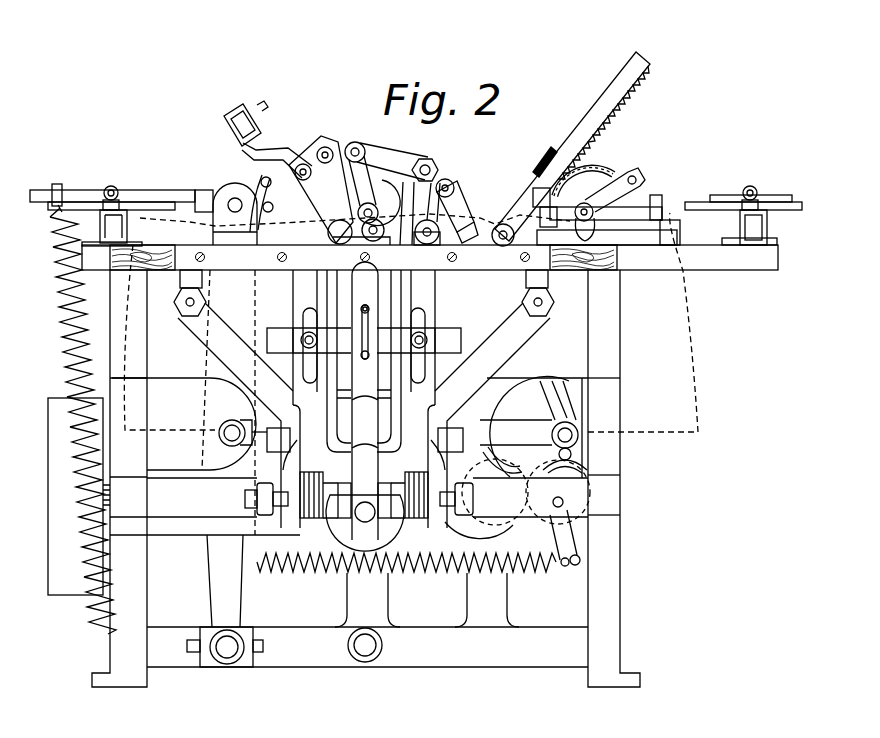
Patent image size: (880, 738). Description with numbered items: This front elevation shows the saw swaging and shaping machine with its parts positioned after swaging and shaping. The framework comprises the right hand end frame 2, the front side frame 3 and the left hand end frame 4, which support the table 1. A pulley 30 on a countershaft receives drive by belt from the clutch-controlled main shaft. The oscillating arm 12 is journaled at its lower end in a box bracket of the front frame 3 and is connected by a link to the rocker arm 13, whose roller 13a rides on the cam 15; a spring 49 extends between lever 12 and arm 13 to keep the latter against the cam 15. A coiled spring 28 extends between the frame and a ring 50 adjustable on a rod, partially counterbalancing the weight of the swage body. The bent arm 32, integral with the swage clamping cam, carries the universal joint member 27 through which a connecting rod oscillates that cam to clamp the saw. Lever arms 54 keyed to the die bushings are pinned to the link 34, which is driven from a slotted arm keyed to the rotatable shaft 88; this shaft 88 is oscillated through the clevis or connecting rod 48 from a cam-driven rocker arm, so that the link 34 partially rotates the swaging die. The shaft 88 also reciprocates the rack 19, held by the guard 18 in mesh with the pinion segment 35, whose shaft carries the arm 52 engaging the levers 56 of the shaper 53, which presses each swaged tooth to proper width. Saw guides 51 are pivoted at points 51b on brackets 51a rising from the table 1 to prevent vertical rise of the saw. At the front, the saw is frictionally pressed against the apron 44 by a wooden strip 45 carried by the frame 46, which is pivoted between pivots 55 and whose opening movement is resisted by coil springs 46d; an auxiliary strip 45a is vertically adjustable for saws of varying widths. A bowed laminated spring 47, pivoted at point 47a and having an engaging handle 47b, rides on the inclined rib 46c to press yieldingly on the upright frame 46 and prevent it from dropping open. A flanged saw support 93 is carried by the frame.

The table 1 is at (740, 266).
The right hand end frame 2 is at (612, 586).
The front side frame 3 is at (367, 601).
The left hand end frame 4 is at (108, 660).
The oscillating arm 12 is at (238, 192).
The rocker arm 13 is at (545, 408).
The roller 13a is at (583, 523).
The cam 15 is at (520, 478).
The guard 18 is at (543, 156).
The rack 19 is at (614, 90).
The universal joint member 27 is at (232, 110).
The coiled spring 28 is at (60, 330).
The pulley 30 is at (60, 400).
The bent arm 32 is at (290, 141).
The link 34 is at (396, 160).
The pinion segment 35 is at (613, 166).
The apron 44 is at (537, 355).
The wooden strip 45 is at (615, 272).
The auxiliary strip 45a is at (448, 333).
The frame 46 is at (548, 283).
The inclined surface or rib 46c is at (440, 268).
The coil springs 46d is at (294, 540).
The bowed laminated spring 47 is at (364, 401).
The pivot point 47a is at (363, 515).
The engaging handle 47b is at (370, 318).
The clevis 48 is at (456, 189).
The spring 49 is at (322, 572).
The ring 50 is at (62, 184).
The saw guides 51 is at (163, 201).
The brackets 51a is at (104, 228).
The pivotal mounting points 51b is at (772, 181).
The arm 52 is at (625, 178).
The shaper 53 is at (586, 204).
The lever arms 54 is at (366, 183).
The pivots 55 is at (245, 497).
The lever 56 is at (637, 183).
The rotatable shaft 88 is at (427, 244).
The saw support 93 is at (458, 448).